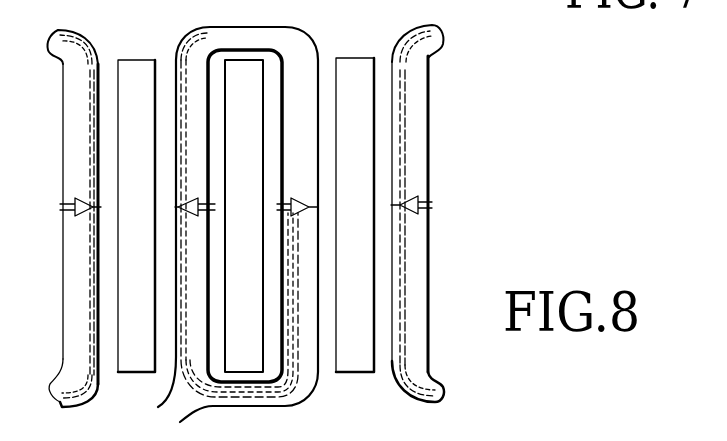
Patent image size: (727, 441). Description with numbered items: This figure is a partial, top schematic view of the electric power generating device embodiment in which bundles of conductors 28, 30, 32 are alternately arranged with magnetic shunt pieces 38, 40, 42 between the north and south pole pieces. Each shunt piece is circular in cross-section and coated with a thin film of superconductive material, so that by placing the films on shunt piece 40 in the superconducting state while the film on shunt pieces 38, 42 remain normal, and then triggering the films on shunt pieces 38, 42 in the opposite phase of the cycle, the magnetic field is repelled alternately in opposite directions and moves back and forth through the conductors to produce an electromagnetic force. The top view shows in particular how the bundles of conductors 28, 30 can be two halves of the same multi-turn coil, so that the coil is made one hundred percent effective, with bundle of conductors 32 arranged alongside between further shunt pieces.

The bundle of conductors 28 is at (176, 189).
The bundle of conductors 30 is at (318, 135).
The bundle of conductors 32 is at (392, 173).
The magnetic shunt piece 38 is at (143, 60).
The magnetic shunt piece 40 is at (243, 60).
The magnetic shunt piece 42 is at (345, 58).